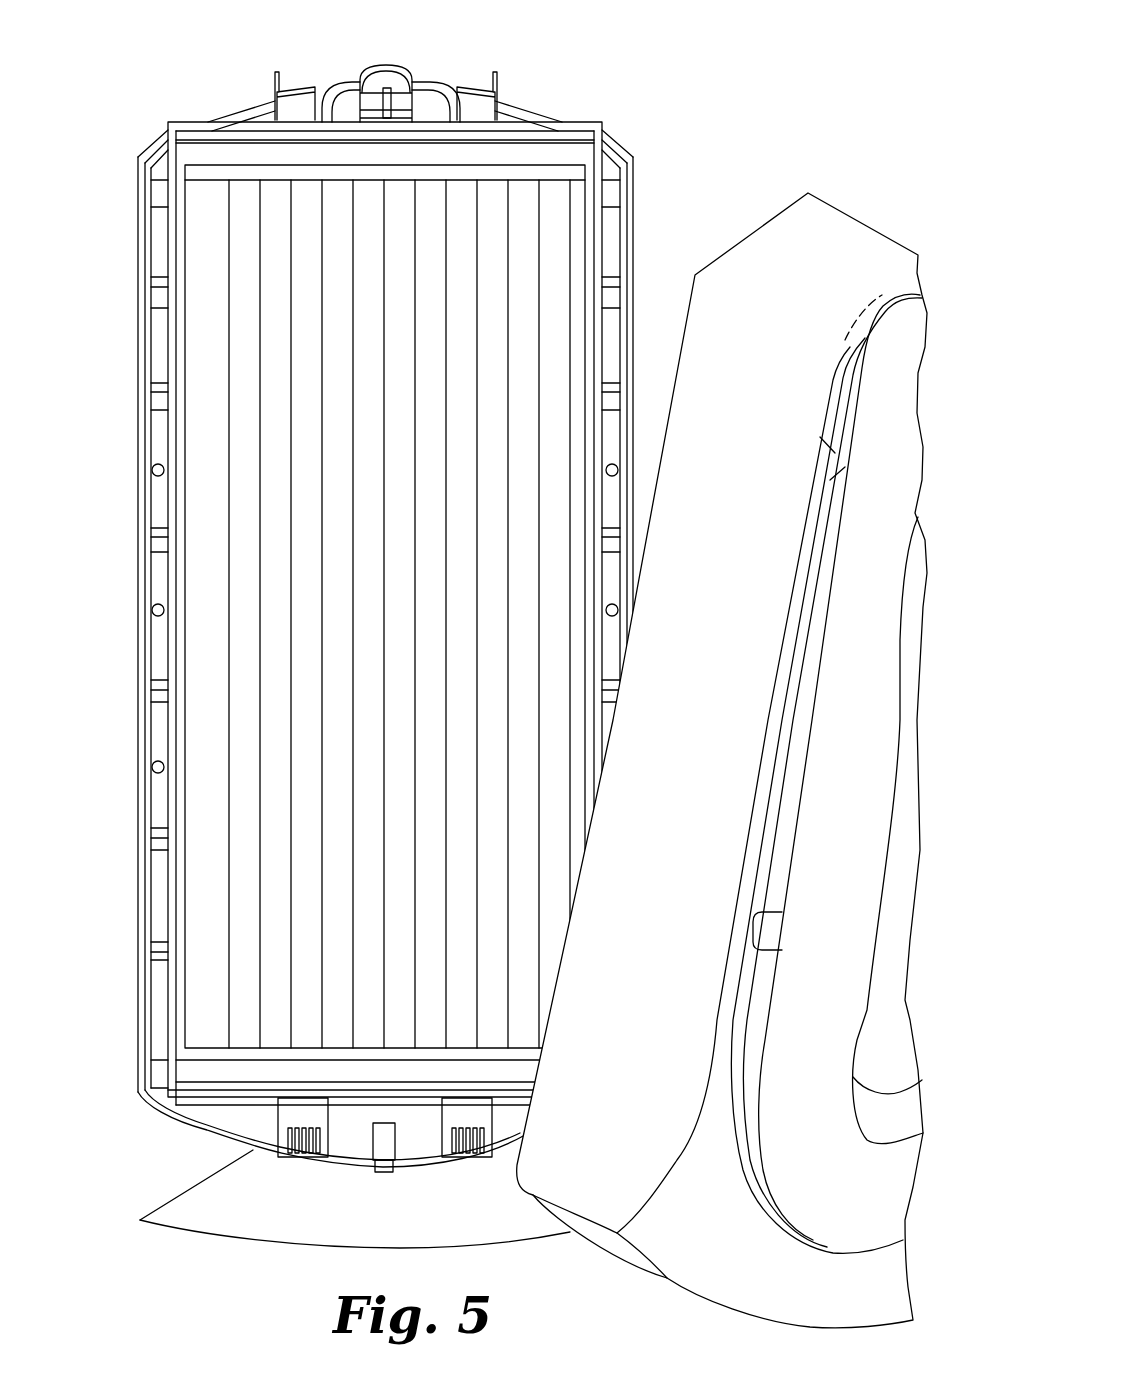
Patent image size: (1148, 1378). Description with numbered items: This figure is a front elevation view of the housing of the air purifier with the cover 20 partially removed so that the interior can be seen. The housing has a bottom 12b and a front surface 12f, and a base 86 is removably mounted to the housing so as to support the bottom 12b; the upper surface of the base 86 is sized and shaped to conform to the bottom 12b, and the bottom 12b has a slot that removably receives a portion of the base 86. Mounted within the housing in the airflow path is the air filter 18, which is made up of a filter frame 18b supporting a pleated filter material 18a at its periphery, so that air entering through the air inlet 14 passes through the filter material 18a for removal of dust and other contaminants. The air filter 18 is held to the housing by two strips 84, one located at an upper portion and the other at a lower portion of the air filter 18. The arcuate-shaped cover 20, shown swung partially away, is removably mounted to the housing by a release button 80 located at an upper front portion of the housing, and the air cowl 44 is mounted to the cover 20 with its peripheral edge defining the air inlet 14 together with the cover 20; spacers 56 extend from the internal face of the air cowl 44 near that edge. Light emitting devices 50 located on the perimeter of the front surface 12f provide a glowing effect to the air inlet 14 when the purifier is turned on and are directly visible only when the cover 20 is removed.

The bottom 12b is at (193, 1128).
The front surface 12f is at (168, 540).
The air inlet 14 is at (886, 280).
The air filter 18 is at (500, 247).
The pleated filter material 18a is at (473, 228).
The filter frame 18b is at (214, 255).
The cover 20 is at (795, 263).
The air cowl 44 is at (902, 398).
The light emitting device 50 is at (158, 768).
The spacers 56 is at (830, 503).
The release button 80 is at (388, 77).
The strips 84 is at (218, 157).
The base 86 is at (198, 1193).